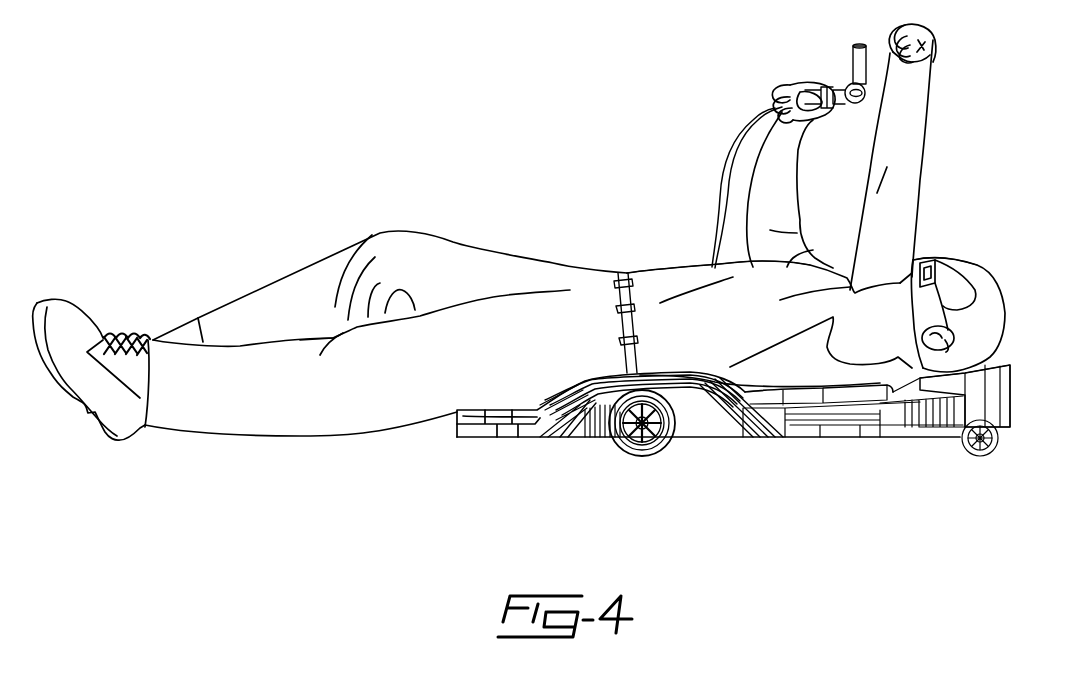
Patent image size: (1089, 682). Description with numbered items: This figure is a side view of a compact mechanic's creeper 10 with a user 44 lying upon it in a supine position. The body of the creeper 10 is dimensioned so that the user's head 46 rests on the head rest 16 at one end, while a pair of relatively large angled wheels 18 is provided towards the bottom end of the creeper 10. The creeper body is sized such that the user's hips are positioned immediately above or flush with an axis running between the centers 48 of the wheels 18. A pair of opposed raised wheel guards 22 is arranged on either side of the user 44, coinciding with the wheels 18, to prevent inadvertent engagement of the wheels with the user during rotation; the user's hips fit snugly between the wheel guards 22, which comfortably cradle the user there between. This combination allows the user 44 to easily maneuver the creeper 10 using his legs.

The creeper 10 is at (585, 437).
The head rest portion 16 is at (995, 368).
The angled wheels 18 is at (667, 443).
The raised wheel guards 22 is at (675, 377).
The user 44 is at (690, 283).
The head 46 is at (948, 268).
The centers of the wheels 48 is at (645, 442).